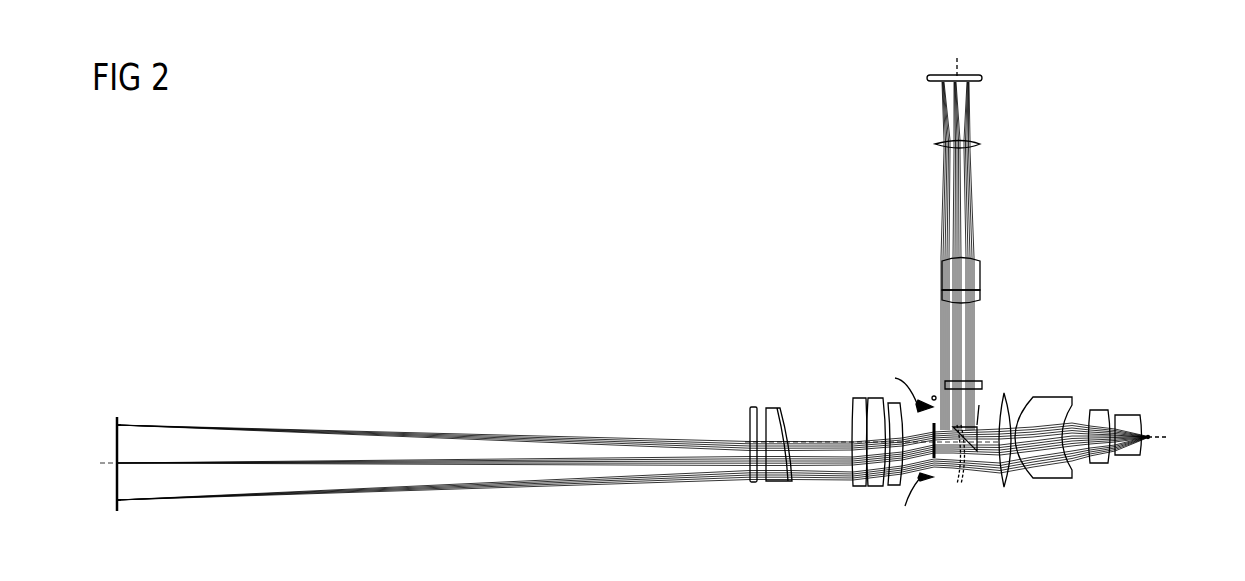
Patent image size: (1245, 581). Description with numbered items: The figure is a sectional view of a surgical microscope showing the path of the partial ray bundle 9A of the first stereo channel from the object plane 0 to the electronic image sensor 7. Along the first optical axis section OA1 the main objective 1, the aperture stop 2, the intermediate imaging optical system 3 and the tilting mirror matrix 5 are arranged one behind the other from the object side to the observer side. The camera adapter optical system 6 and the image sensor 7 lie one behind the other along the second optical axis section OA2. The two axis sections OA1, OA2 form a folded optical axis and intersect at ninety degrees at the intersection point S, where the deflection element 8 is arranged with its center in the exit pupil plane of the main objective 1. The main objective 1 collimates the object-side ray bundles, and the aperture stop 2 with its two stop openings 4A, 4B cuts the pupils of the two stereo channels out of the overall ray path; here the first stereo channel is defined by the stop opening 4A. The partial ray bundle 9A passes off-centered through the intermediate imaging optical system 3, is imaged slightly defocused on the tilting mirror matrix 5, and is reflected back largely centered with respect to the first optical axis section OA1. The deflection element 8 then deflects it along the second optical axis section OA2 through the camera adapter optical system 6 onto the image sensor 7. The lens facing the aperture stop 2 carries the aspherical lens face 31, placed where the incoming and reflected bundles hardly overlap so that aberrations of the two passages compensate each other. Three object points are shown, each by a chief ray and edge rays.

The object plane 0 is at (120, 418).
The main objective 1 is at (897, 493).
The aperture stop 2 is at (936, 462).
The intermediate imaging optical system 3 is at (1147, 487).
The aspherical lens face 31 is at (1003, 393).
The stop opening 4A is at (907, 501).
The stop opening 4B is at (901, 389).
The tilting mirror matrix 5 is at (1149, 432).
The camera adapter optical system 6 is at (932, 148).
The electronic image sensor 7 is at (940, 73).
The deflection element 8 is at (966, 470).
The partial ray bundle 9A is at (979, 478).
The intersection point S is at (979, 409).
The first optical axis section OA1 is at (1178, 438).
The second optical axis section OA2 is at (956, 54).